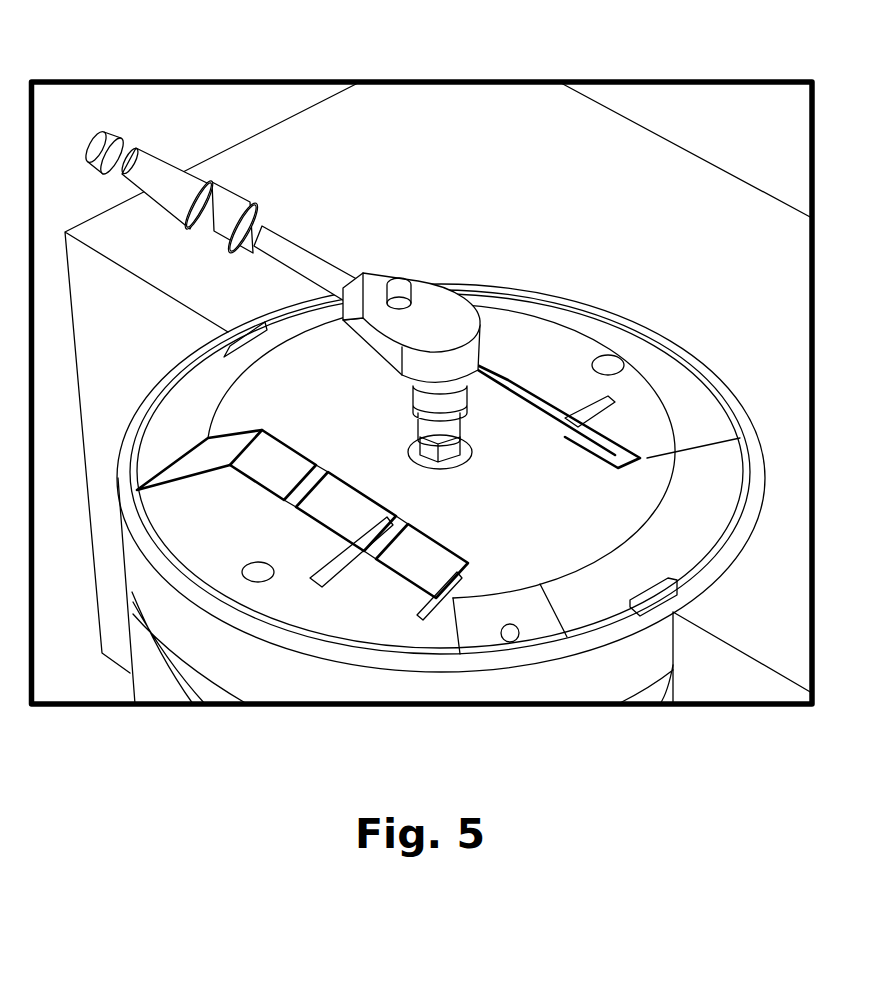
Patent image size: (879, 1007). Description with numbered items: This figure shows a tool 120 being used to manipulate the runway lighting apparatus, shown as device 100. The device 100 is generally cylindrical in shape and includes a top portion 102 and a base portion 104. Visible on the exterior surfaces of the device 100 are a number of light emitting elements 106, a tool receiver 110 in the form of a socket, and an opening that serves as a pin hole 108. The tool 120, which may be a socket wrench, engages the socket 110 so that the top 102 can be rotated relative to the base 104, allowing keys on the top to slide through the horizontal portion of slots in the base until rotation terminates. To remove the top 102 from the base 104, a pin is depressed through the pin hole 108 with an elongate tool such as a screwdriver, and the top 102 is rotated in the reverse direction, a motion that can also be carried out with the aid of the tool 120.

The device 100 is at (441, 532).
The top portion 102 is at (300, 626).
The base portion 104 is at (160, 688).
The light emitting elements 106 is at (435, 571).
The pin hole 108 is at (510, 644).
The tool receiver 110 is at (474, 457).
The tool 120 is at (129, 150).